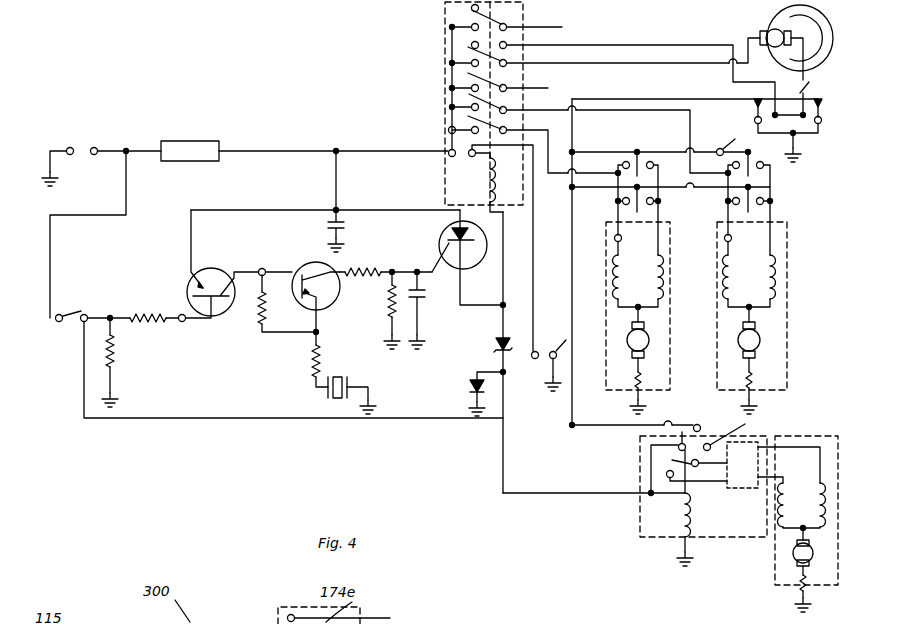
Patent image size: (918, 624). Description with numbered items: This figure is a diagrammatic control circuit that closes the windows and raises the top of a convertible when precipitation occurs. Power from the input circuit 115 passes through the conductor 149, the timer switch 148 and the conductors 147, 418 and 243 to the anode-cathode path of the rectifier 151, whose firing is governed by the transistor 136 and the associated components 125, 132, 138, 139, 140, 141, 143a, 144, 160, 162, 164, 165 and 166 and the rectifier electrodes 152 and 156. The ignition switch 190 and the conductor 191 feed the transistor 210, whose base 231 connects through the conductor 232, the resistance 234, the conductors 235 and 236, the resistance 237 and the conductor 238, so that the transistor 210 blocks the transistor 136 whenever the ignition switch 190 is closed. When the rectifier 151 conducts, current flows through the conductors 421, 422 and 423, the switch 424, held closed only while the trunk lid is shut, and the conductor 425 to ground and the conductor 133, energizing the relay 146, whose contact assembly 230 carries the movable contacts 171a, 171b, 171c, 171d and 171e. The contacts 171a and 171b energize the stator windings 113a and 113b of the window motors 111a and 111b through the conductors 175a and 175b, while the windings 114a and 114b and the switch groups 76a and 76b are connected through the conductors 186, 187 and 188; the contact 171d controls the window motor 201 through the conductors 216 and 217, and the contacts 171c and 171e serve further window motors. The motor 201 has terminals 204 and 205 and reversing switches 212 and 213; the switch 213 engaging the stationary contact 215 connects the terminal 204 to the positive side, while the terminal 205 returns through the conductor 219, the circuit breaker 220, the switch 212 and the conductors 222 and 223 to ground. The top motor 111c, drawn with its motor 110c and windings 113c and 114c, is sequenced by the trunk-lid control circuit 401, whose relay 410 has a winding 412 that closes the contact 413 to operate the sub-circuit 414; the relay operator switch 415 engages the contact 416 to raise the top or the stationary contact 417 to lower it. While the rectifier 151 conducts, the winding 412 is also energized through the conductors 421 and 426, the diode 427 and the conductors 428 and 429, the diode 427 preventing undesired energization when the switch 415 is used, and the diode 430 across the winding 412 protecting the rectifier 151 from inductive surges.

The input circuit 115 is at (89, 142).
The conductor 133 is at (68, 149).
The conductor 149 is at (142, 148).
The timer switch 148 is at (198, 141).
The conductor 147 is at (288, 150).
The conductor 191 is at (58, 246).
The conductor 418 is at (338, 175).
The conductor 243 is at (258, 211).
The capacitor 166 is at (328, 228).
The ignition switch 190 is at (70, 312).
The resistance 234 is at (150, 312).
The conductor 235 is at (150, 321).
The conductor 232 is at (183, 322).
The conductor 236 is at (108, 327).
The resistance 237 is at (104, 352).
The conductor 238 is at (108, 378).
The conductor 188 is at (304, 420).
The base 231 is at (218, 312).
The transistor 210 is at (215, 270).
The junction 143a is at (256, 270).
The transistor base 141 is at (292, 268).
The transistor collector 164 is at (326, 260).
The transistor 140 is at (318, 318).
The transistor 136 is at (266, 306).
The conductor 144 is at (262, 334).
The resistor 139 is at (312, 362).
The conductor 138 is at (314, 389).
The pickup transducer 125 is at (372, 356).
The ground 132 is at (371, 389).
The resistor 162 is at (366, 268).
The resistor 160 is at (388, 299).
The capacitor 165 is at (422, 302).
The rectifier 151 is at (438, 244).
The emitter 152 is at (448, 232).
The base 156 is at (440, 263).
The conductor 421 is at (476, 305).
The conductor 422 is at (501, 290).
The conductor 426 is at (498, 336).
The diode 427 is at (496, 349).
The diode 430 is at (470, 388).
The conductor 423 is at (533, 293).
The switch 424 is at (556, 349).
The conductor 425 is at (553, 376).
The relay 230 is at (448, 46).
The relay 146 is at (445, 136).
The relay contact 171a is at (470, 113).
The relay contact 171b is at (470, 93).
The relay contact 171c is at (468, 77).
The relay contact 171d is at (511, 51).
The relay contact 171e is at (498, 25).
The conductor 175a is at (548, 125).
The conductor 175b is at (531, 113).
The conductor 216 is at (650, 48).
The conductor 217 is at (646, 68).
The window motor 201 is at (766, 17).
The motor terminal 205 is at (812, 28).
The motor terminal 204 is at (759, 34).
The conductor 219 is at (806, 80).
The circuit breaker 220 is at (810, 90).
The stationary contact 215 is at (734, 99).
The switch 213 is at (749, 106).
The switch 212 is at (820, 110).
The conductor 222 is at (838, 136).
The conductor 223 is at (800, 153).
The conductor 187 is at (727, 143).
The conductor 186 is at (690, 189).
The contactor 76a is at (614, 238).
The contactor 76b is at (724, 239).
The stator winding 113a is at (637, 281).
The stator winding 113b is at (736, 281).
The coil 113c is at (785, 488).
The coil 114a is at (661, 282).
The coil 114b is at (772, 282).
The coil 114c is at (792, 487).
The window motor 111a is at (608, 393).
The window motor 111b is at (789, 389).
The top motor 111c is at (820, 434).
The motor 110c is at (807, 561).
The contact 416 is at (676, 428).
The relay operator switch 415 is at (714, 433).
The stationary contact 417 is at (748, 428).
The control circuit 401 is at (640, 530).
The relay contact 413 is at (670, 462).
The relay 410 is at (696, 513).
The relay winding 412 is at (676, 513).
The conductor 429 is at (681, 546).
The sub-circuit 414 is at (744, 490).
The conductor 428 is at (558, 494).